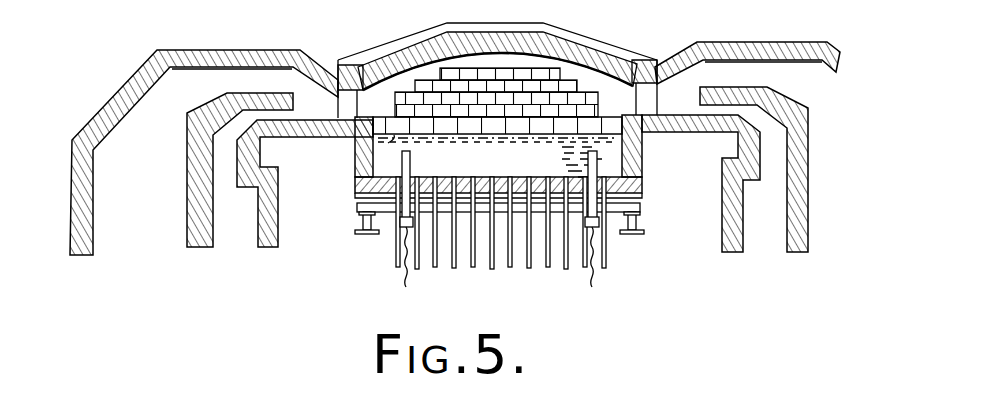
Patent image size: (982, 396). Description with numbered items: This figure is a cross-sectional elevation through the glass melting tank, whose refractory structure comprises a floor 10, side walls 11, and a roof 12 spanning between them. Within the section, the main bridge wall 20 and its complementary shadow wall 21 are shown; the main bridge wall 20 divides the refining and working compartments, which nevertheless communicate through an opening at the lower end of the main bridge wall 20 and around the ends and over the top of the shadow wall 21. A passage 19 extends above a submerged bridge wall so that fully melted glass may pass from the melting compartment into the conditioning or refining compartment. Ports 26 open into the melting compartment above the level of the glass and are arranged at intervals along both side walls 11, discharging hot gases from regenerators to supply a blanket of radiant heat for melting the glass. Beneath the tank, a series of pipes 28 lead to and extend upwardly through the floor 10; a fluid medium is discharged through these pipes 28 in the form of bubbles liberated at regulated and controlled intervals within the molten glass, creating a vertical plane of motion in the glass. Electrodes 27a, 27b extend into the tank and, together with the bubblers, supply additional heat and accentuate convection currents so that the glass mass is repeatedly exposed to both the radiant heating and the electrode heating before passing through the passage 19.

The floor 10 is at (362, 189).
The side walls 11 is at (358, 173).
The roof 12 is at (488, 31).
The passage 19 is at (396, 143).
The main bridge wall 20 is at (598, 133).
The shadow wall 21 is at (533, 70).
The ports 26 is at (345, 103).
The electrode rod 27a is at (592, 160).
The electrode rod 27b is at (411, 172).
The pipes 28 is at (474, 270).